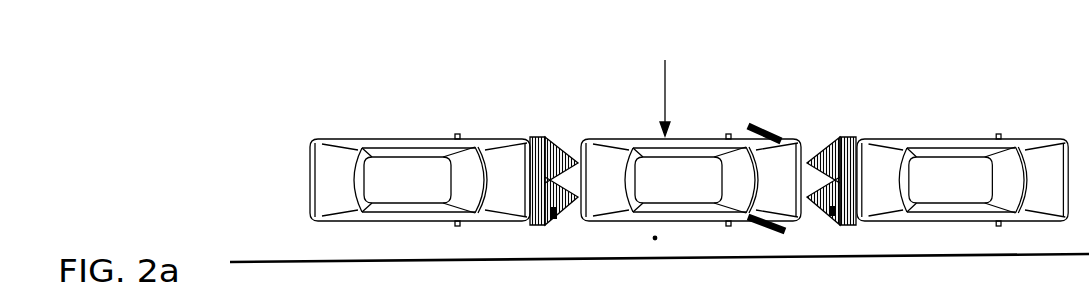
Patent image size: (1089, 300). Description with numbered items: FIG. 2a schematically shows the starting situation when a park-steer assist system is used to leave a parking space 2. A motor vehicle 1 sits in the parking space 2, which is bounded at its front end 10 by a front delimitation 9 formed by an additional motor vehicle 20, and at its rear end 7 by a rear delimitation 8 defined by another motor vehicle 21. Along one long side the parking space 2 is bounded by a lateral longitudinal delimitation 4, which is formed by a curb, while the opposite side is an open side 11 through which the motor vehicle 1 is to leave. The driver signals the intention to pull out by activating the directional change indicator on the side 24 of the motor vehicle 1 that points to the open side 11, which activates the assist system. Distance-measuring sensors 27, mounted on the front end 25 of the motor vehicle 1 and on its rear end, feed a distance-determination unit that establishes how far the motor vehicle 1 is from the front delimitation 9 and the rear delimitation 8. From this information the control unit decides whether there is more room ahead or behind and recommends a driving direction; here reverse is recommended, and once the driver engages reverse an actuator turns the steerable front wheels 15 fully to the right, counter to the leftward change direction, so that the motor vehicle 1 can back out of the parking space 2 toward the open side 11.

The motor vehicle 1 is at (691, 131).
The parking space 2 is at (655, 238).
The lateral longitudinal delimitation 4 is at (720, 257).
The rear end 7 is at (555, 215).
The rear delimitation 8 is at (528, 140).
The front delimitation 9 is at (851, 138).
The front end 10 is at (815, 216).
The open side 11 is at (665, 86).
The steerable front wheels 15 is at (763, 215).
The additional motor vehicle 20 is at (991, 157).
The another motor vehicle 21 is at (362, 165).
The side of motor vehicle 24 is at (692, 119).
The front end of motor vehicle 25 is at (833, 212).
The distance-measuring sensors 27 is at (580, 152).